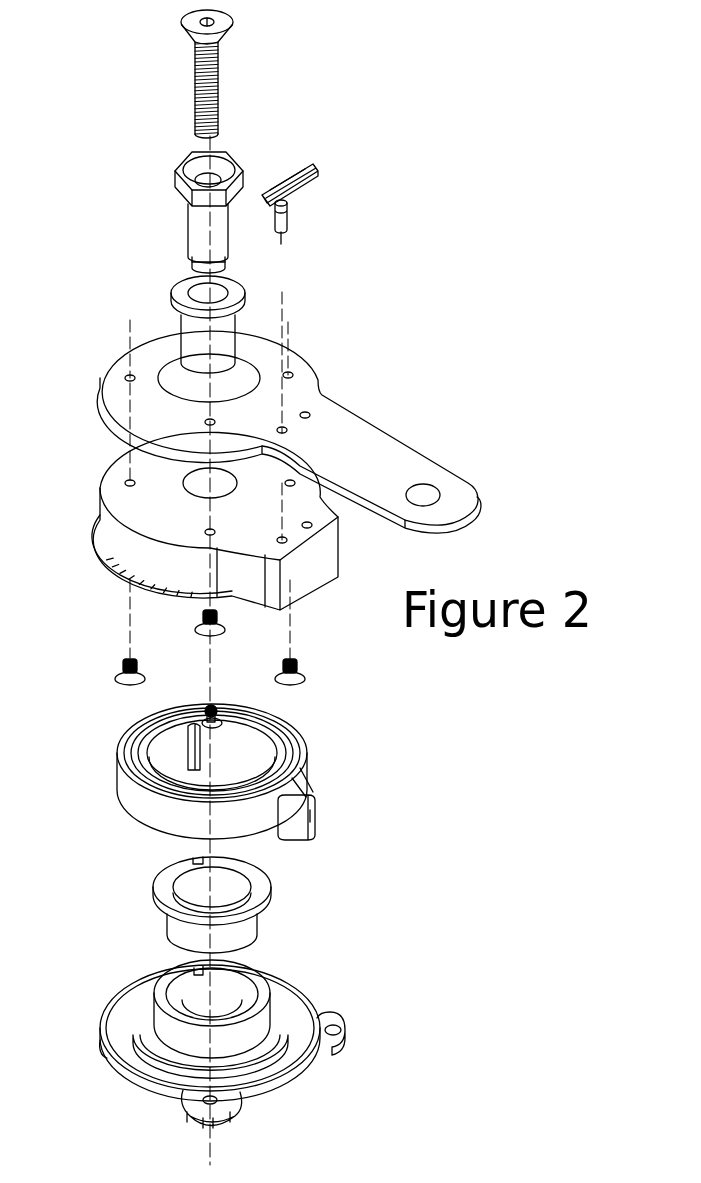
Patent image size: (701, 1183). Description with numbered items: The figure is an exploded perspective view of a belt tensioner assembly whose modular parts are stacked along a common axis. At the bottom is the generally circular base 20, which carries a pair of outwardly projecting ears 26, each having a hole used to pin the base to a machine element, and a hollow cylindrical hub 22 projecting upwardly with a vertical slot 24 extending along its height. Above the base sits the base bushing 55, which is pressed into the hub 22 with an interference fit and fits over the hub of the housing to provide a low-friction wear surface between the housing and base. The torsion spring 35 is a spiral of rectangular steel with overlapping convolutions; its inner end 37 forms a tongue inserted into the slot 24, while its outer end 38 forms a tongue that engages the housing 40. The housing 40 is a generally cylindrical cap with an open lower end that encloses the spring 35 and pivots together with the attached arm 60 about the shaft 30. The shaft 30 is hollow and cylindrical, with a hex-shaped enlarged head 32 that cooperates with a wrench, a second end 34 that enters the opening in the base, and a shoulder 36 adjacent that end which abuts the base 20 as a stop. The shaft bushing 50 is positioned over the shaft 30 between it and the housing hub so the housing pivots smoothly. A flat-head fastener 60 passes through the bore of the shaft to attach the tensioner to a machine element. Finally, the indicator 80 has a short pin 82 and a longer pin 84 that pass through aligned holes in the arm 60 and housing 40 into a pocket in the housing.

The base 20 is at (234, 1040).
The hub 22 is at (158, 995).
The vertical slot 24 is at (198, 970).
The ears 26 is at (337, 1043).
The shaft 30 is at (197, 223).
The enlarged diameter head 32 is at (178, 188).
The second end 34 is at (193, 258).
The torsion spring 35 is at (293, 733).
The shoulder 36 is at (230, 248).
The inner end 37 is at (197, 748).
The outer end 38 is at (313, 807).
The housing 40 is at (125, 540).
The shaft bushing 50 is at (208, 324).
The base bushing 55 is at (247, 925).
The fastener 60 is at (222, 78).
The indicator 80 is at (305, 172).
The short pin 82 is at (305, 185).
The longer pin 84 is at (287, 225).